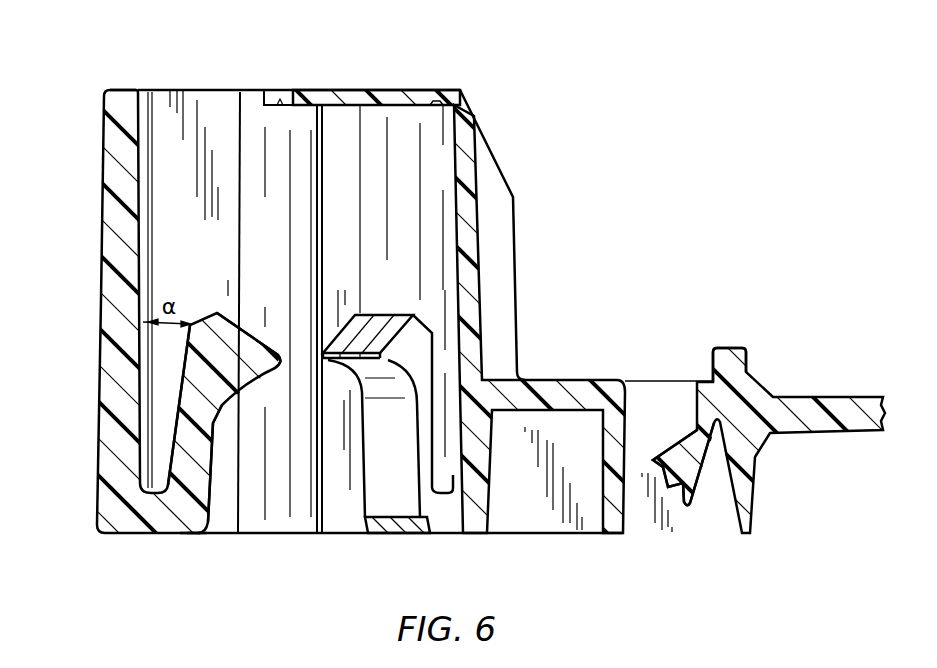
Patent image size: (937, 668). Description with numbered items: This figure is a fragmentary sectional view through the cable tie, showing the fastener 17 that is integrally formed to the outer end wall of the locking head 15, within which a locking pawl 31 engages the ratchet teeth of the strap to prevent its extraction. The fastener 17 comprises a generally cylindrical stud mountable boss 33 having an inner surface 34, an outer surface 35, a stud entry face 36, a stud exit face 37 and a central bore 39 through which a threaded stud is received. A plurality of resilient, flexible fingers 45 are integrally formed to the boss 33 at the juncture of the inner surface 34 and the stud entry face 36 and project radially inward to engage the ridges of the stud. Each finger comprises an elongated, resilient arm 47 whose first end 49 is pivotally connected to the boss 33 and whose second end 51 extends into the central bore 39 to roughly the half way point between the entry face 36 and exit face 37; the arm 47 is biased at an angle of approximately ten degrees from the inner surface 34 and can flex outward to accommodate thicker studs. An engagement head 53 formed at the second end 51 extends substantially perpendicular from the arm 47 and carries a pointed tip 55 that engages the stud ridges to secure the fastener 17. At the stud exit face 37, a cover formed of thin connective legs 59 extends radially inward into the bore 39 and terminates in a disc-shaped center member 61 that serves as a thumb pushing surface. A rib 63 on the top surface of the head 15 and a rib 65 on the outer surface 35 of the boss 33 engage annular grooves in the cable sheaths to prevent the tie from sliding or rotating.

The locking head 15 is at (623, 542).
The fastener 17 is at (105, 555).
The locking pawl 31 is at (690, 463).
The stud mountable boss 33 is at (101, 213).
The inner surface 34 is at (140, 127).
The outer surface 35 is at (102, 143).
The stud entry face 36 is at (173, 533).
The stud exit face 37 is at (118, 90).
The central bore 39 is at (372, 203).
The resilient flexible fingers 45 is at (200, 539).
The elongated resilient arm 47 is at (203, 443).
The first end 49 is at (188, 520).
The second end 51 is at (186, 374).
The engagement head 53 is at (228, 340).
The pointed tip 55 is at (387, 333).
The connective legs 59 is at (392, 90).
The center member 61 is at (320, 88).
The rib 63 is at (733, 360).
The rib 65 is at (502, 198).